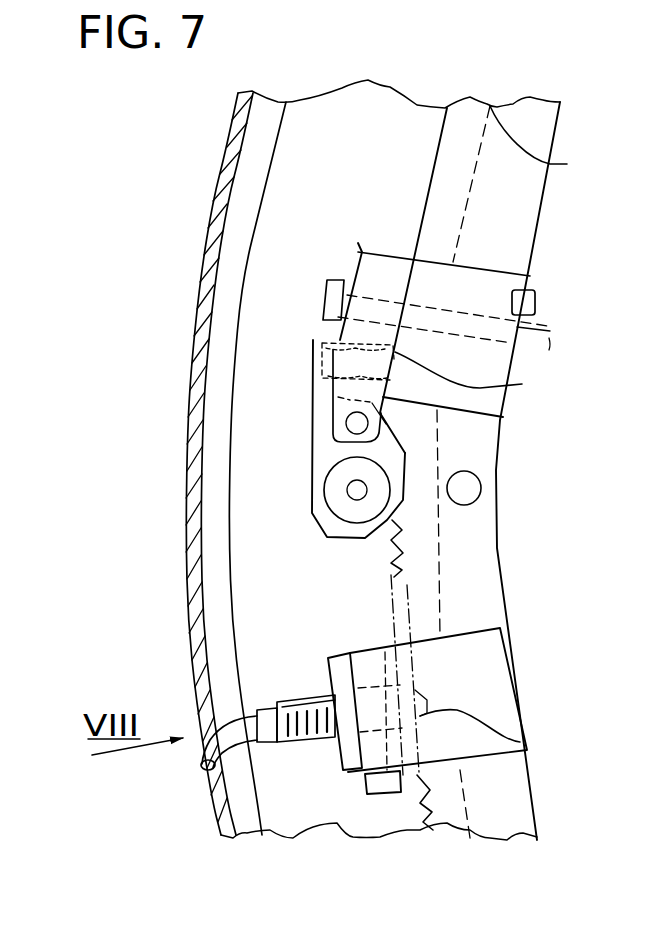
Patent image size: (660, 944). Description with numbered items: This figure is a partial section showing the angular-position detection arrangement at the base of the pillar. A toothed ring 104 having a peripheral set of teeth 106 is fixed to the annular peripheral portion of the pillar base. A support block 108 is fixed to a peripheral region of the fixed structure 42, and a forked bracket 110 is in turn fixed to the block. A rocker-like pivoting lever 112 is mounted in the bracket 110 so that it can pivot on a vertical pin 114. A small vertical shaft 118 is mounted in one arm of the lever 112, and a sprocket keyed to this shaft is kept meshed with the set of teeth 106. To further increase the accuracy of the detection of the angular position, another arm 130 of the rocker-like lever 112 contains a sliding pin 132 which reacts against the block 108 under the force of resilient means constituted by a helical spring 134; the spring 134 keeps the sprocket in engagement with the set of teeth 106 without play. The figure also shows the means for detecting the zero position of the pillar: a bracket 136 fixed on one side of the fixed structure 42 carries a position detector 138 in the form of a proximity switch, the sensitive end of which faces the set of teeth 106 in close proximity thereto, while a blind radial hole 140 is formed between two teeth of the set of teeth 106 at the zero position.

The fixed structure 42 is at (490, 106).
The toothed ring 104 is at (500, 548).
The set of teeth 106 is at (390, 563).
The support block 108 is at (498, 283).
The forked bracket 110 is at (358, 243).
The rocker-like pivoting lever 112 is at (310, 453).
The vertical pin 114 is at (346, 423).
The small vertical shaft 118 is at (357, 492).
The arm 130 is at (325, 345).
The sliding pin 132 is at (510, 386).
The helical spring 134 is at (337, 347).
The bracket 136 is at (493, 663).
The position detector 138 is at (287, 716).
The blind radial hole 140 is at (520, 742).